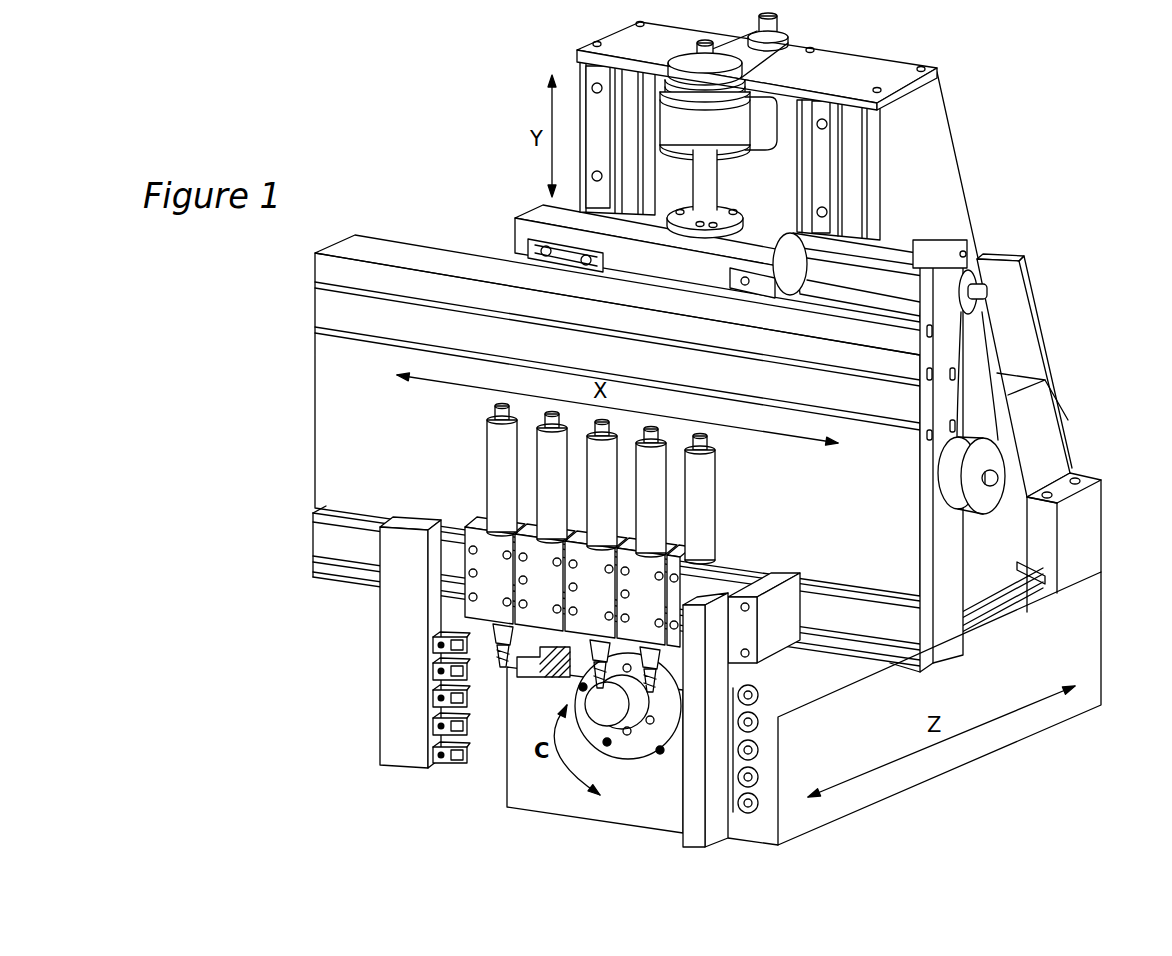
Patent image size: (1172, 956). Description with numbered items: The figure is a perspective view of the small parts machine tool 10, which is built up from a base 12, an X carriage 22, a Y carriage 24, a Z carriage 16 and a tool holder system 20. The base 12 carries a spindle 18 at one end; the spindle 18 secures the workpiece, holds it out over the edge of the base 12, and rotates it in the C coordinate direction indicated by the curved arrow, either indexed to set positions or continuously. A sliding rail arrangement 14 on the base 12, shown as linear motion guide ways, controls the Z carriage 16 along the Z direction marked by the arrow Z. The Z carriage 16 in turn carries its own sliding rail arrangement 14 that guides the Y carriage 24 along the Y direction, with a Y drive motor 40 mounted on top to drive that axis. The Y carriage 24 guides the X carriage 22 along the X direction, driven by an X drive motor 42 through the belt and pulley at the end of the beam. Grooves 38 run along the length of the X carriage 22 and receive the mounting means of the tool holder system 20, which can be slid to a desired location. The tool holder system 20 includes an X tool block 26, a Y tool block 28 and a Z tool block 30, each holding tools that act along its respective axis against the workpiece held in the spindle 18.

The small parts machine tool 10 is at (436, 109).
The base 12 is at (935, 767).
The sliding rail arrangement 14 is at (843, 126).
The Z carriage 16 is at (950, 190).
The spindle 18 is at (607, 715).
The tool holder system 20 is at (348, 713).
The X carriage 22 is at (347, 437).
The Y carriage 24 is at (541, 214).
The X tool block 26 is at (393, 762).
The Y tool block 28 is at (483, 607).
The Z tool block 30 is at (695, 830).
The grooves 38 is at (318, 556).
The Y drive motor 40 is at (643, 47).
The X drive motor 42 is at (988, 458).